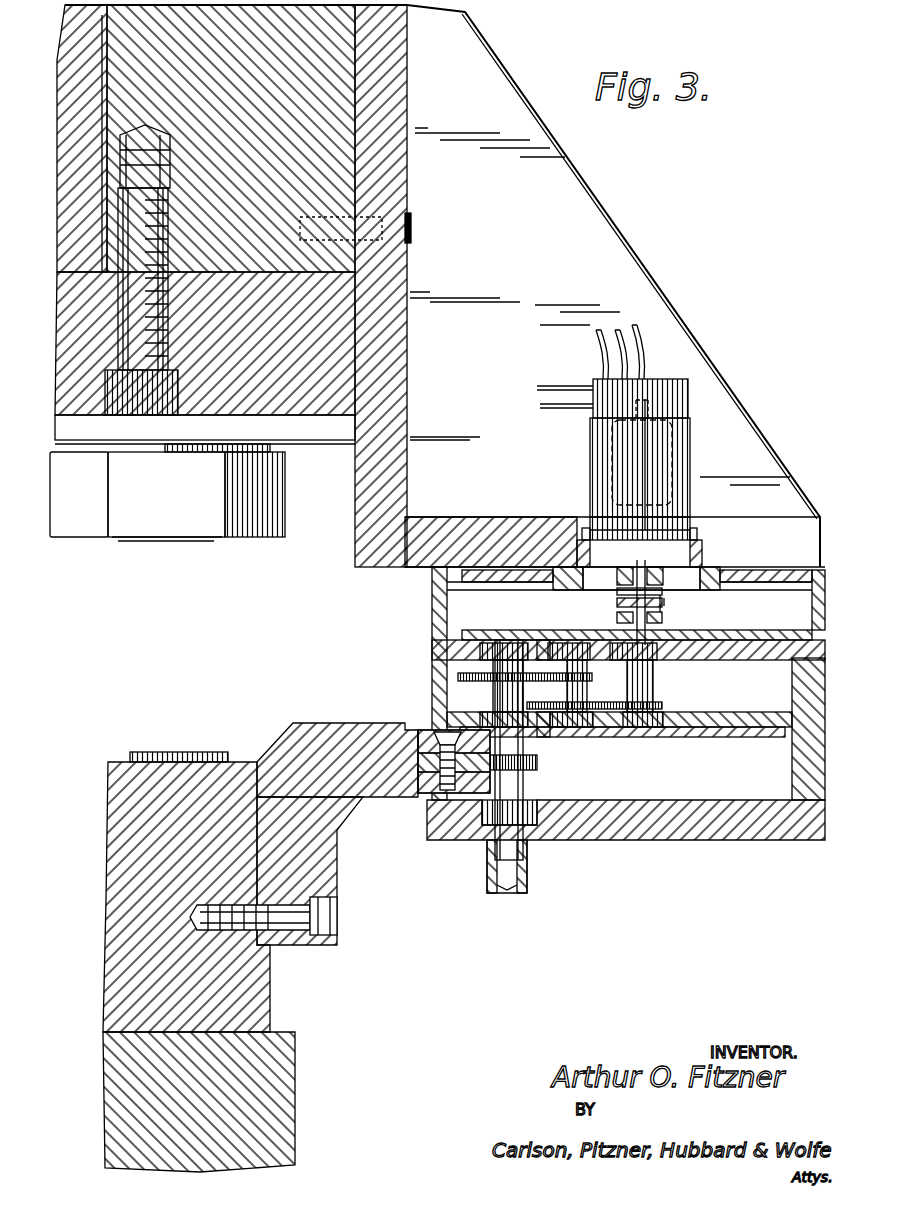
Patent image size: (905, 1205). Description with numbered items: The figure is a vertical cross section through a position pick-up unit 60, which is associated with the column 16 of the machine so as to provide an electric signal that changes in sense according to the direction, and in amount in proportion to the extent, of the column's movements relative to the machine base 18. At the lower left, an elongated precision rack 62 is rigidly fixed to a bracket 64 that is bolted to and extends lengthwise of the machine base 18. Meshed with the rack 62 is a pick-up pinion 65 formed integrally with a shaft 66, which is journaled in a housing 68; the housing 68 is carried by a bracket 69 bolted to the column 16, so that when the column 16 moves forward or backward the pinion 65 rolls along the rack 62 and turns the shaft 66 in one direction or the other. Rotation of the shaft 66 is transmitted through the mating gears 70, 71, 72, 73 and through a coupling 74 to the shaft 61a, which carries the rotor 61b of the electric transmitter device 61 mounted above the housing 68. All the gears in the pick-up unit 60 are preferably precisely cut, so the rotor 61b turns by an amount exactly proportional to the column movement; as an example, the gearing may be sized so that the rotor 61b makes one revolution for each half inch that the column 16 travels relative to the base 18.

The column 16 is at (340, 88).
The machine base 18 is at (258, 982).
The position pick-up unit 60 is at (689, 301).
The electric transmitter device 61 is at (677, 400).
The shaft 61a is at (620, 575).
The rotor 61b is at (677, 450).
The precision rack 62 is at (467, 785).
The bracket 64 is at (373, 742).
The pick-up pinion 65 is at (537, 770).
The shaft 66 is at (515, 748).
The housing 68 is at (612, 826).
The bracket 69 is at (360, 555).
The gear 70 is at (533, 684).
The gear 71 is at (580, 681).
The gear 72 is at (588, 702).
The gear 73 is at (656, 704).
The coupling 74 is at (663, 603).